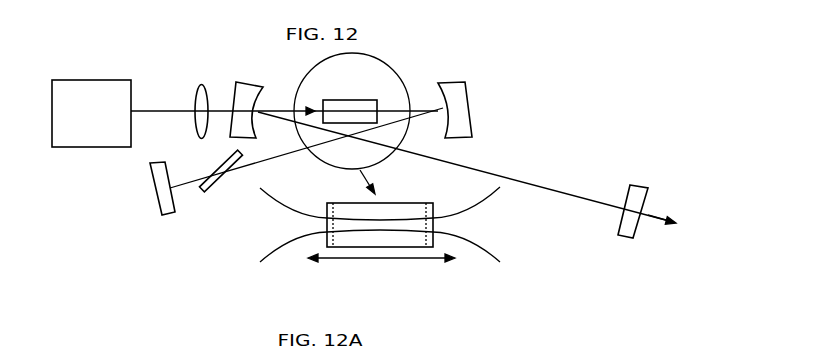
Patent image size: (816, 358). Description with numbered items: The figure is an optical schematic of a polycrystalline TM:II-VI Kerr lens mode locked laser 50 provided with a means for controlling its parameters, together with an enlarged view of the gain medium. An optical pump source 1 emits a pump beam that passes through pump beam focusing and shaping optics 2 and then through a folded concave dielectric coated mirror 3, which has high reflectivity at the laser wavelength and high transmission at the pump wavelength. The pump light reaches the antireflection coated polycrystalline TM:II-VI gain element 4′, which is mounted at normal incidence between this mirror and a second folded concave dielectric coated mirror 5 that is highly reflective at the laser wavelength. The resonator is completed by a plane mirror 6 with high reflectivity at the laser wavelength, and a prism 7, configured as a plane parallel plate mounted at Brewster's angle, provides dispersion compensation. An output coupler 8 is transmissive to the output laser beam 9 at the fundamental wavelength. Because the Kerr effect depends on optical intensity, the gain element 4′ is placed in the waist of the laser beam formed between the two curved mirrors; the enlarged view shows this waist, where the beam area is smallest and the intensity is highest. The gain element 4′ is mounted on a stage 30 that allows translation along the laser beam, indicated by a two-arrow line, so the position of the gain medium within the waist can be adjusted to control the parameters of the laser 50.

In FIG. 12, the optical pump source 1 is at (91, 101).
In FIG. 12, the pump beam focusing and shaping optics 2 is at (200, 97).
In FIG. 12, the folded concave dielectric coated mirror 3 is at (246, 97).
In FIG. 12, the antireflection coated polycrystalline TM:II-VI gain element 4′ is at (363, 78).
In FIG. 12A, the antireflection coated polycrystalline TM:II-VI gain element 4′ is at (412, 177).
In FIG. 12, the folded concave dielectric coated mirror 5 is at (455, 97).
In FIG. 12, the plane mirror 6 is at (166, 182).
In FIG. 12, the prism 7 is at (221, 176).
In FIG. 12, the output coupler 8 is at (630, 211).
In FIG. 12, the output laser beam 9 is at (659, 231).
In FIG. 12A, the stage 30 is at (275, 285).
In FIG. 12, the Kerr lens mode locked laser 50 is at (485, 135).